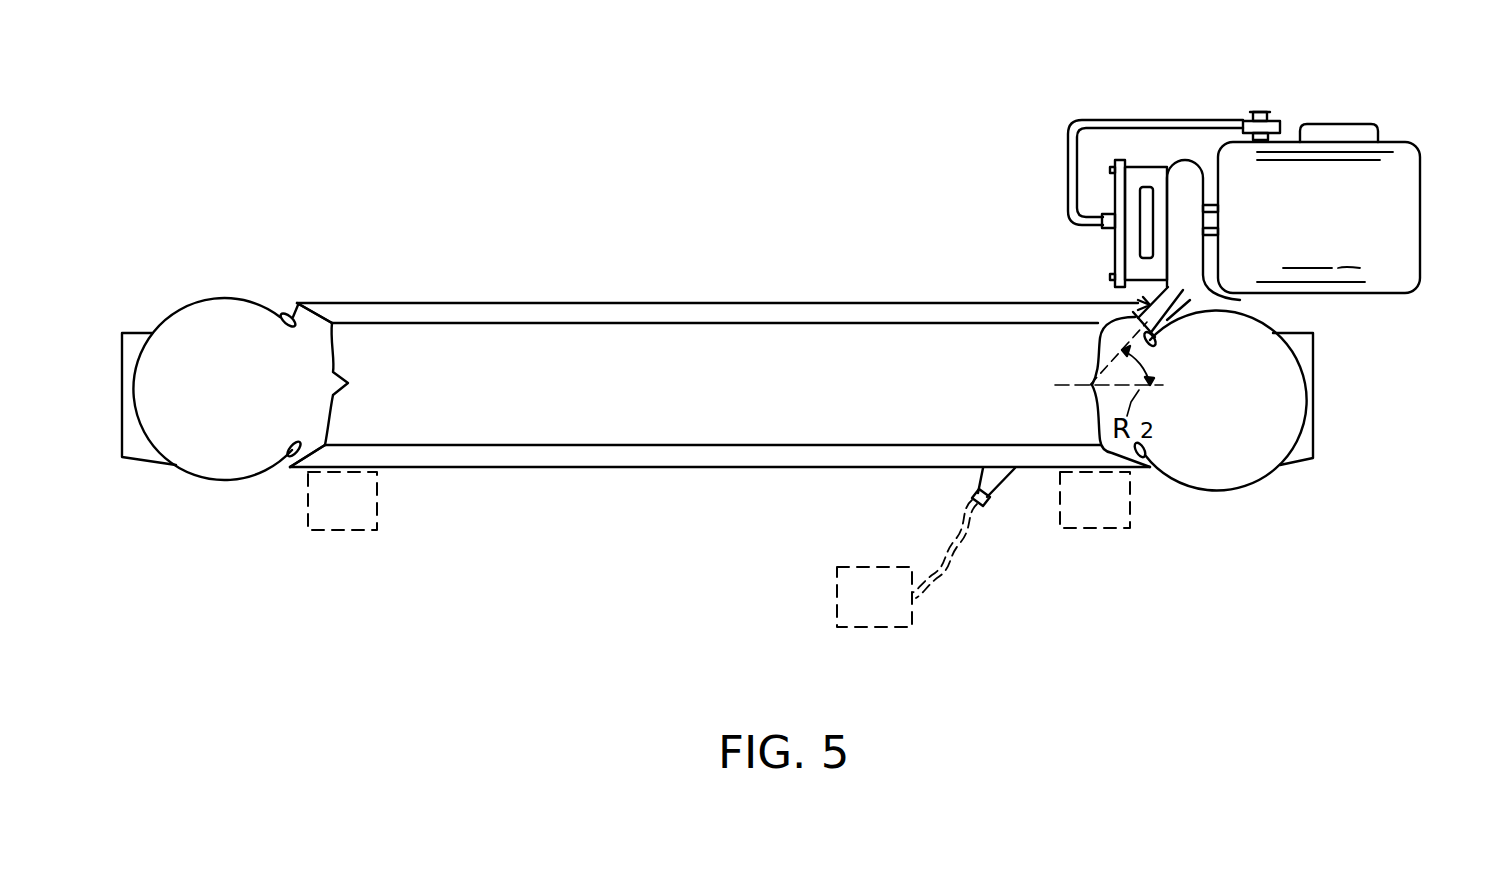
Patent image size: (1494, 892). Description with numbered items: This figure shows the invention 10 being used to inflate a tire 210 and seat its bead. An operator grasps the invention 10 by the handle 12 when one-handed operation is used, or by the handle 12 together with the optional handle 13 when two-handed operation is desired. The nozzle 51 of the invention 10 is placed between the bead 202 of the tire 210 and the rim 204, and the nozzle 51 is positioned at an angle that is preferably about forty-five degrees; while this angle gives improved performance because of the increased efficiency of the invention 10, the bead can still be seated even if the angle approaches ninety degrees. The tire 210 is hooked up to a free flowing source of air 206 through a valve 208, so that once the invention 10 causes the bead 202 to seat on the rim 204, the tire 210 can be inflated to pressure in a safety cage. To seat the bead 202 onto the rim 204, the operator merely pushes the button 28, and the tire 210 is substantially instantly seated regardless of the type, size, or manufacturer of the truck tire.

The invention 10 is at (1490, 166).
The handle 12 is at (1343, 122).
The optional handle 13 is at (1146, 187).
The button 28 is at (1283, 120).
The nozzle 51 is at (1240, 300).
The bead 202 is at (284, 326).
The rim 204 is at (297, 302).
The free flowing source of air 206 is at (935, 583).
The valve 208 is at (1000, 483).
The tire 210 is at (225, 482).